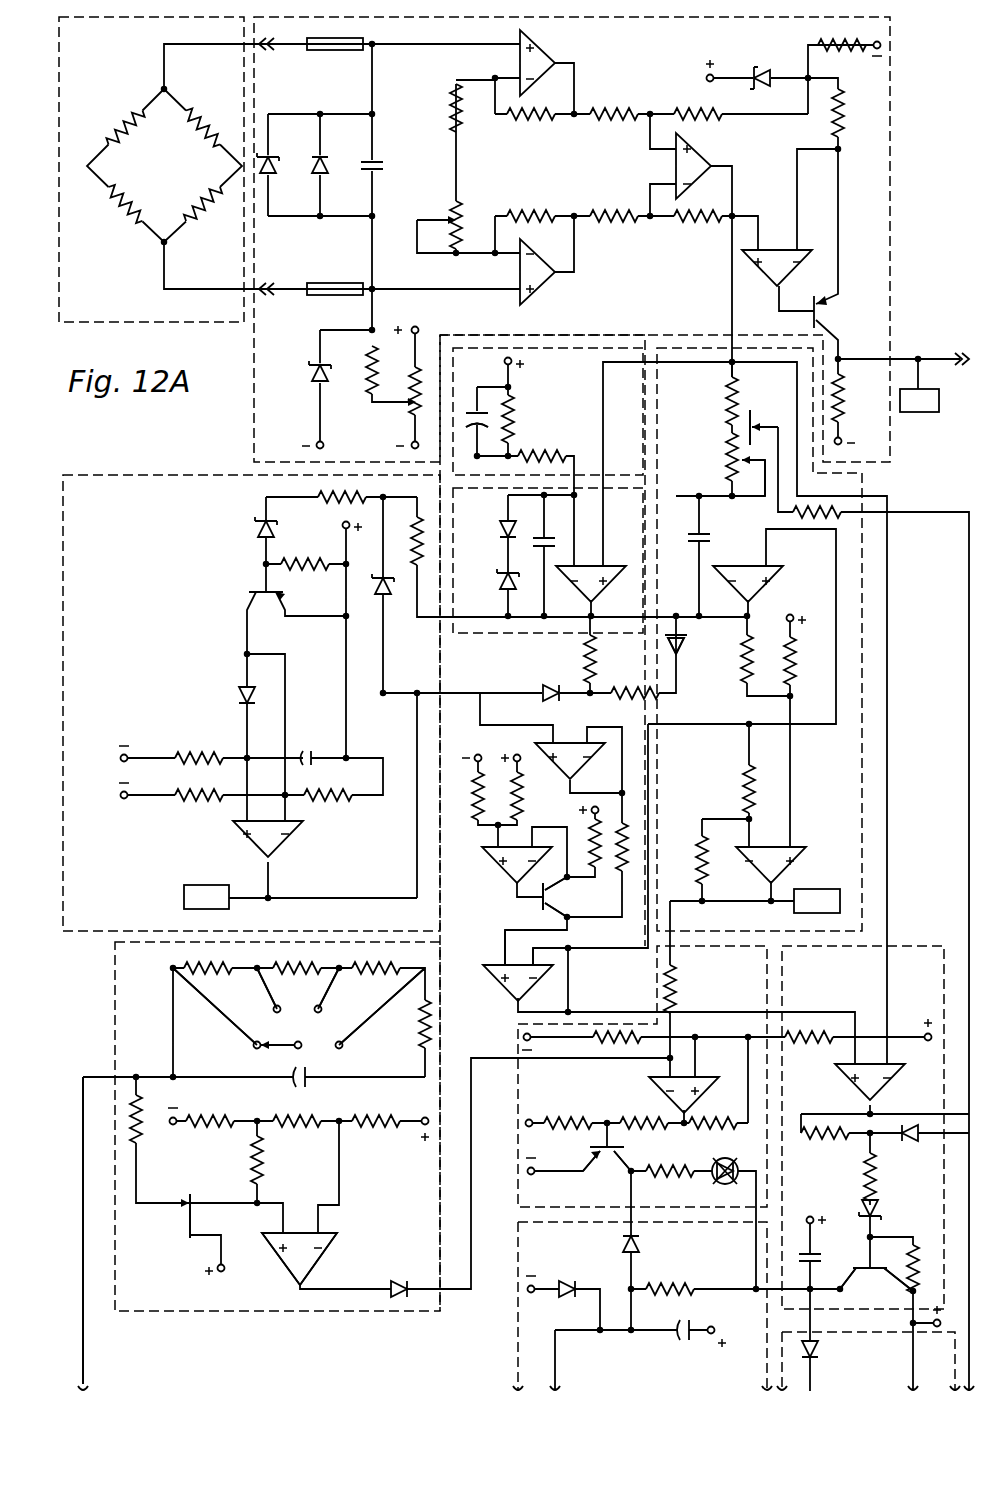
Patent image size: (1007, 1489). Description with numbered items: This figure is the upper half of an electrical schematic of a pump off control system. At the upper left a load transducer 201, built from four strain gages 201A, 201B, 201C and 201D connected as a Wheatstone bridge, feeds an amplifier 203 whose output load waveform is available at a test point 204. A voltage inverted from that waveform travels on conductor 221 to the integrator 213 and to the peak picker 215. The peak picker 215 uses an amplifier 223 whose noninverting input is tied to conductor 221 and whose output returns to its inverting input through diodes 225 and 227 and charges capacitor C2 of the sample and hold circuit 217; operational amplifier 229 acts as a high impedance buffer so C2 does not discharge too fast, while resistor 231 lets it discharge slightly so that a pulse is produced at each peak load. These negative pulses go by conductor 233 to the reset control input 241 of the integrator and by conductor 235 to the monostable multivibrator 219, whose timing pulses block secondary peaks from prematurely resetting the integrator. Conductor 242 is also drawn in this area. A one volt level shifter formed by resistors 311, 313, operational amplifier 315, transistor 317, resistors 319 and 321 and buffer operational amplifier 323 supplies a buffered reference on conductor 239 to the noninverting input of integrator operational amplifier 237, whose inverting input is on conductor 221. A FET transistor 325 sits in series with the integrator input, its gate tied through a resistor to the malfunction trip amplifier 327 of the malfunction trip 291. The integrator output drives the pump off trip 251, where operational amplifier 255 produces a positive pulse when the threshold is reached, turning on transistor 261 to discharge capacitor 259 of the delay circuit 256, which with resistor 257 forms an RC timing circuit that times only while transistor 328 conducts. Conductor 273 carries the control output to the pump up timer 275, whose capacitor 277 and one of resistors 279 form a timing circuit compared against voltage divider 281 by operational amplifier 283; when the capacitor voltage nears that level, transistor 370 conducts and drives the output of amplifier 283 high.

The load transducer 201 is at (160, 323).
The strain gage 201A is at (206, 116).
The strain gage 201B is at (200, 226).
The strain gage 201C is at (122, 226).
The strain gage 201D is at (127, 118).
The amplifier 203 is at (254, 426).
The test point 204 is at (922, 357).
The integrator 213 is at (865, 654).
The peak picker 215 is at (595, 648).
The sample and hold circuit 217 is at (565, 346).
The monostable multivibrator 219 is at (441, 905).
The conductor 221 is at (730, 281).
The amplifier 223 is at (622, 590).
The diode 225 is at (512, 545).
The diode 227 is at (504, 595).
The operational amplifier 229 is at (548, 760).
The resistor 231 is at (514, 422).
The conductor 233 is at (672, 694).
The conductor 235 is at (430, 619).
The operational amplifier 237 is at (770, 580).
The conductor 239 is at (812, 725).
The reset control input 241 is at (686, 642).
The conductor 242 is at (417, 752).
The pump off trip 251 is at (518, 1090).
The operational amplifier 255 is at (648, 1092).
The delay circuit 256 is at (518, 1346).
The resistor 257 is at (664, 1286).
The capacitor 259 is at (696, 1341).
The transistor 261 is at (607, 1161).
The conductor 273 is at (86, 1354).
The pump up timer 275 is at (445, 966).
The capacitor 277 is at (312, 1088).
The resistors 279 is at (299, 1006).
The voltage divider 281 is at (248, 1131).
The operational amplifier 283 is at (338, 1246).
The malfunction trip 291 is at (905, 946).
The resistor 311 is at (484, 806).
The resistor 313 is at (521, 780).
The operational amplifier 315 is at (492, 870).
The transistor 317 is at (549, 898).
The resistor 319 is at (592, 836).
The resistor 321 is at (624, 872).
The operational amplifier 323 is at (500, 989).
The FET transistor 325 is at (746, 427).
The malfunction trip amplifier 327 is at (850, 1078).
The transistor 328 is at (858, 1266).
The transistor 370 is at (186, 1222).
The capacitor C2 is at (476, 408).